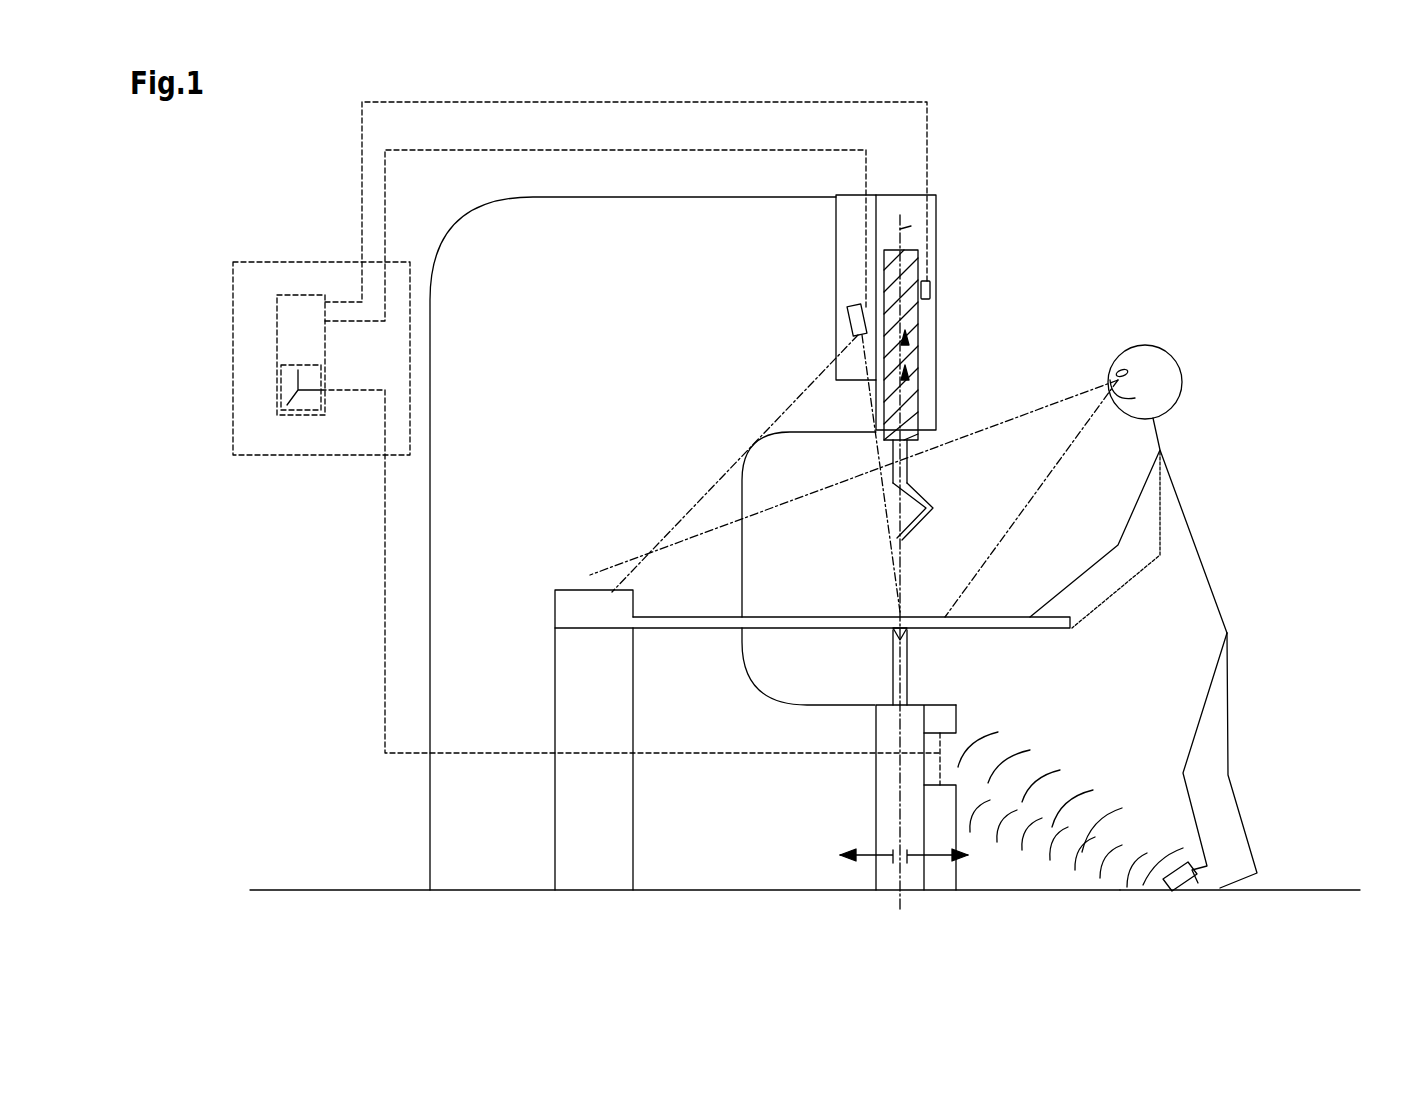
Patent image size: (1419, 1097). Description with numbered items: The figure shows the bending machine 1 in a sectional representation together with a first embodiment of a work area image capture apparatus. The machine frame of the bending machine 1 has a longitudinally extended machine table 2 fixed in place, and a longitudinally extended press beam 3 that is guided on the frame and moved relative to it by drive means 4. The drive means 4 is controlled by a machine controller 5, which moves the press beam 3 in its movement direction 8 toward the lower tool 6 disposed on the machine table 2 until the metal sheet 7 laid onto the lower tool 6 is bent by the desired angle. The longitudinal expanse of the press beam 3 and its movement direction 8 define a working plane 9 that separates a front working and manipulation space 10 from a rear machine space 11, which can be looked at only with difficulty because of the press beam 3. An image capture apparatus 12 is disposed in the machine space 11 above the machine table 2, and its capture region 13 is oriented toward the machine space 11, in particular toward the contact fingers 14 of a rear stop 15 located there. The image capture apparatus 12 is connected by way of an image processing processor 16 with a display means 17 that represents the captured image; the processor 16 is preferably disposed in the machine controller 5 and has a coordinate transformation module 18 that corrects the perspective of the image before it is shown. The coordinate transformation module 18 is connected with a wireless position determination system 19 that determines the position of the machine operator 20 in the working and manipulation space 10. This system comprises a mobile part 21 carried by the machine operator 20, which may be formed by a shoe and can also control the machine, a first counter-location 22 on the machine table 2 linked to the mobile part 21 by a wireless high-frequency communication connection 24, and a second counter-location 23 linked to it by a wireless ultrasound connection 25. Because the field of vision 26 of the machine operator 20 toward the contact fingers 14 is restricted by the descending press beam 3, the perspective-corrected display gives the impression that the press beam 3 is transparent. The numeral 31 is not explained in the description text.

The bending machine 1 is at (1005, 167).
The machine table 2 is at (885, 805).
The press beam 3 is at (905, 265).
The drive means 4 is at (848, 205).
The machine controller 5 is at (300, 426).
The lower tool 6 is at (907, 655).
The metal sheet 7 is at (805, 620).
The movement direction 8 is at (912, 376).
The working plane 9 is at (900, 215).
The front working and manipulation space 10 is at (914, 868).
The rear machine space 11 is at (869, 868).
The image capture apparatus 12 is at (857, 306).
The capture region 13 is at (708, 467).
The contact fingers 14 is at (688, 622).
The rear stop 15 is at (600, 862).
The image processing processor 16 is at (286, 310).
The display means 17 is at (932, 290).
The coordinate transformation module 18 is at (300, 412).
The wireless position determination system 19 is at (1106, 905).
The machine operator 20 is at (1238, 448).
The mobile part 21 is at (1195, 880).
The first counter-location 22 is at (958, 878).
The second counter-location 23 is at (955, 720).
The wireless high-frequency communication connection 24 is at (1050, 870).
The wireless ultrasound connection 25 is at (1150, 801).
The field of vision 26 is at (1063, 362).
The floor surface 31 is at (1305, 880).